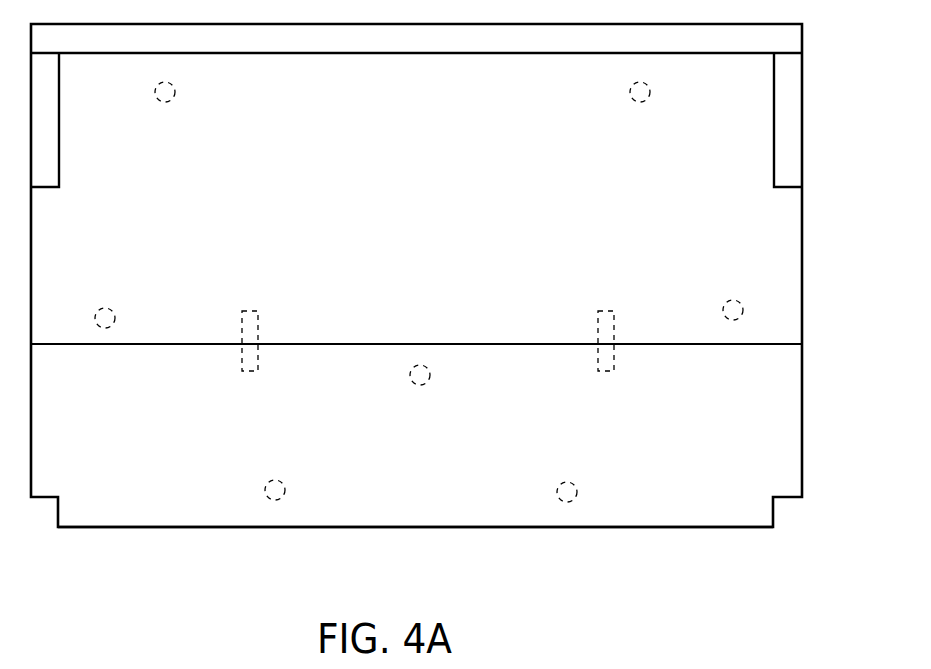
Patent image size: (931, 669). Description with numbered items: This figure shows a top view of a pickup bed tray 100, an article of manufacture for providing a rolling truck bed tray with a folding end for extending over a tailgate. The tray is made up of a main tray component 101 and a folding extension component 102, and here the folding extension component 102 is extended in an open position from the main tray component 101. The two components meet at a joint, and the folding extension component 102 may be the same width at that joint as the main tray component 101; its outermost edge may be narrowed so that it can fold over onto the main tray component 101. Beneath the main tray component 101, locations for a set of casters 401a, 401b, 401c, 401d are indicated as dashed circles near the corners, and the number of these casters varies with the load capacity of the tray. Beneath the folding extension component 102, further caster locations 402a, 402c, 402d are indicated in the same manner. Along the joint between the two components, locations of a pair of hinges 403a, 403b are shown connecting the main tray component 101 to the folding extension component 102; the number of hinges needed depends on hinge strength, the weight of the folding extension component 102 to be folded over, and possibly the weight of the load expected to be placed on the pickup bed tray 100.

The pickup bed tray 100 is at (677, 552).
The main tray component 101 is at (433, 222).
The folding extension component 102 is at (155, 511).
The caster 401a is at (176, 90).
The caster 401b is at (629, 96).
The caster 401c is at (110, 328).
The caster 401d is at (731, 300).
The caster 402a is at (276, 480).
The caster 402c is at (430, 377).
The caster 402d is at (568, 482).
The hinge 403a is at (250, 309).
The hinge 403b is at (606, 309).